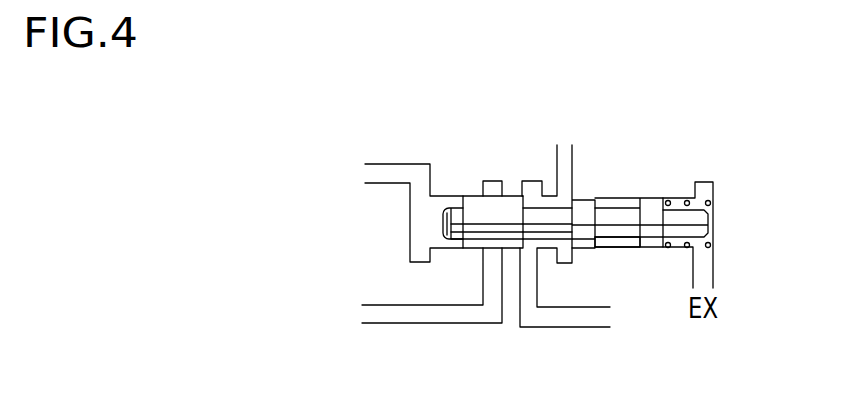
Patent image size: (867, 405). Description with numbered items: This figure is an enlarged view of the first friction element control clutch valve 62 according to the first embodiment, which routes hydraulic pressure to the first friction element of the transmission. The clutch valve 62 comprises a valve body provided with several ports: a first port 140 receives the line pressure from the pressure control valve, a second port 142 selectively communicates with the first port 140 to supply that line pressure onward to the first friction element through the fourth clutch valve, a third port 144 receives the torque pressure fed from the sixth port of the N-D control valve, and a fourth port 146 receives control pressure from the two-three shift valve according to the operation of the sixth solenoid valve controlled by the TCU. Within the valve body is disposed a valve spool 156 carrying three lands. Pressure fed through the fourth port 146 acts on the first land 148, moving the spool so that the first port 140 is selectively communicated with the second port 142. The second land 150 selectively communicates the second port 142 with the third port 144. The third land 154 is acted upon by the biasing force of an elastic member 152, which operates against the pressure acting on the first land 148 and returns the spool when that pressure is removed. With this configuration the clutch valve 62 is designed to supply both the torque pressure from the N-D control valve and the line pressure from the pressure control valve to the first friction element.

The first friction element control clutch valve 62 is at (742, 218).
The first port 140 is at (495, 261).
The second port 142 is at (530, 260).
The third port 144 is at (562, 190).
The fourth port 146 is at (420, 184).
The first land 148 is at (473, 202).
The second land 150 is at (585, 240).
The elastic member 152 is at (687, 248).
The third land 154 is at (653, 208).
The valve spool 156 is at (605, 202).